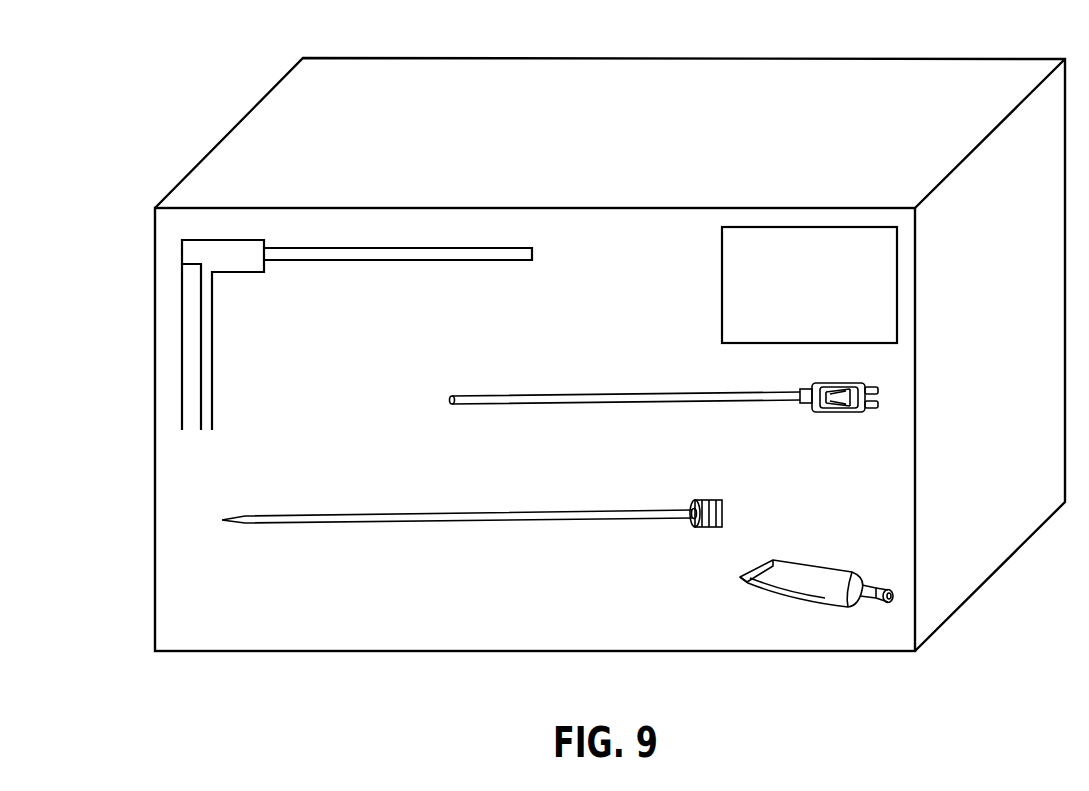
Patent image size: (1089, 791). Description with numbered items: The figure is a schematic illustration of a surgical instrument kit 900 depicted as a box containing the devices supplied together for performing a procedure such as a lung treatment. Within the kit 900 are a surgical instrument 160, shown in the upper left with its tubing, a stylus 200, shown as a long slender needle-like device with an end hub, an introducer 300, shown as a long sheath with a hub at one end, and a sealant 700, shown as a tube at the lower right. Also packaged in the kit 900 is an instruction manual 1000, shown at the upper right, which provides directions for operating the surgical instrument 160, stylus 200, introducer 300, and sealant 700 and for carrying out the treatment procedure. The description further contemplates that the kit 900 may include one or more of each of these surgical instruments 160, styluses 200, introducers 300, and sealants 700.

The surgical instrument kit 900 is at (133, 86).
The surgical instrument 160 is at (183, 281).
The instruction manual 1000 is at (850, 226).
The introducer 300 is at (563, 395).
The stylus 200 is at (363, 514).
The sealant 700 is at (817, 576).